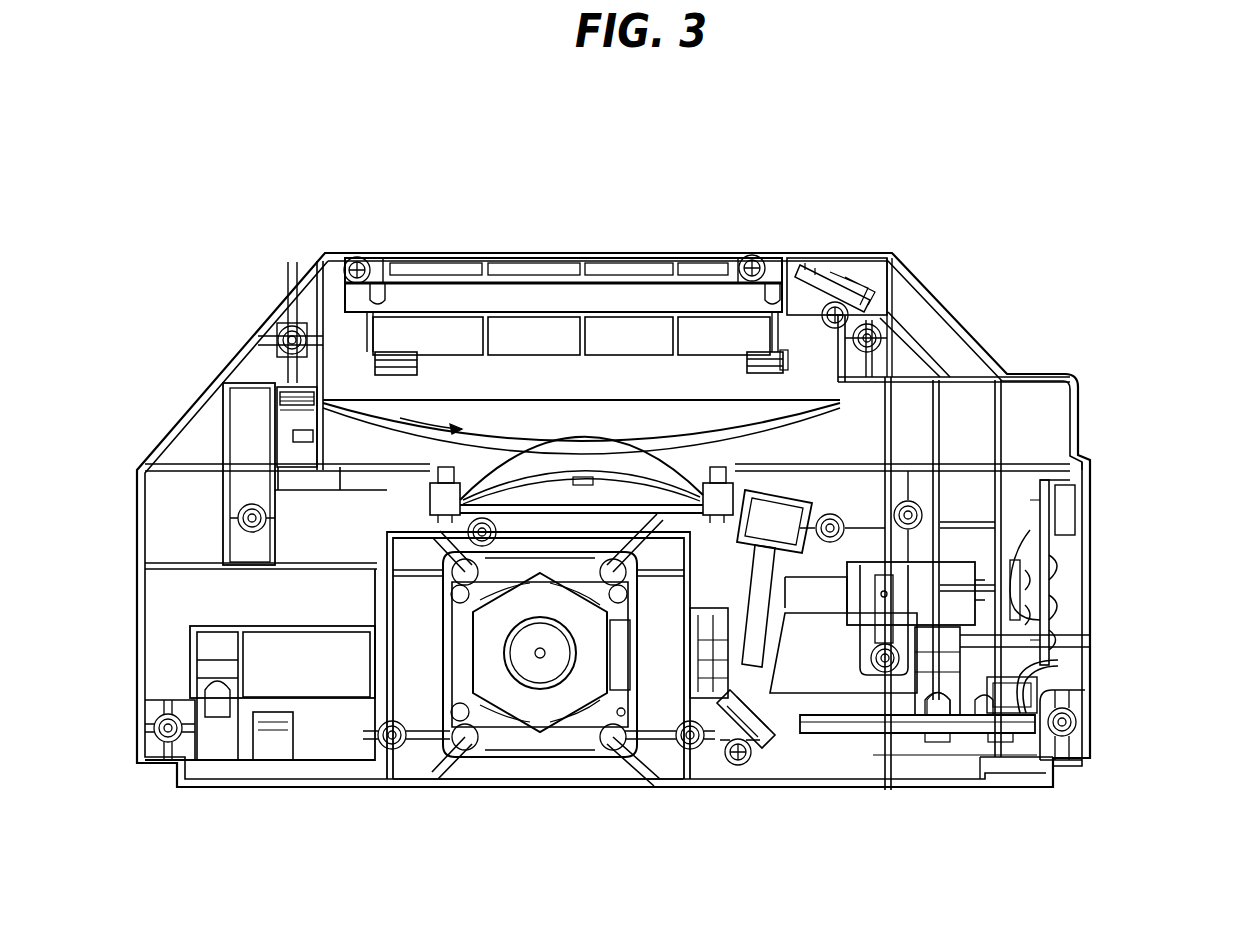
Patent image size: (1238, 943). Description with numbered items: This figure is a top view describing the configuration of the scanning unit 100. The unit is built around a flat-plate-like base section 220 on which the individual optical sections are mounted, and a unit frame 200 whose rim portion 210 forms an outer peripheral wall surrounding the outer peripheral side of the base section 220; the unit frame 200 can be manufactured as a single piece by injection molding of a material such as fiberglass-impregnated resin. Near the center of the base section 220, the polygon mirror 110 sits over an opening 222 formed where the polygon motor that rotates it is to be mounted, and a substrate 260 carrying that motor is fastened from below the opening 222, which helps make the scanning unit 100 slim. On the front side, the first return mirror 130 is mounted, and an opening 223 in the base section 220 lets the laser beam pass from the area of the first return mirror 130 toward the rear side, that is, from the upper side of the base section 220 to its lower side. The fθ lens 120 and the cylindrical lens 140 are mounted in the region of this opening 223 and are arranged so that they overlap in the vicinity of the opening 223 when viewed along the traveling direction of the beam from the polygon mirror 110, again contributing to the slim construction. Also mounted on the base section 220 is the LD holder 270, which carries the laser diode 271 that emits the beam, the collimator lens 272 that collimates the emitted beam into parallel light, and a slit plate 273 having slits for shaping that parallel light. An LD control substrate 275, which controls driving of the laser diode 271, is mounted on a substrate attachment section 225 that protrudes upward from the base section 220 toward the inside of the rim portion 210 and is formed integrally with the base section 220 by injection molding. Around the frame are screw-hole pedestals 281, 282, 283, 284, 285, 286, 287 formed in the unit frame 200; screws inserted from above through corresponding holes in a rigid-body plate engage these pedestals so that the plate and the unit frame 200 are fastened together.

The scanning unit 100 is at (568, 178).
The polygon mirror 110 is at (585, 714).
The fθ lens 120 is at (598, 443).
The first return mirror 130 is at (428, 302).
The cylindrical lens 140 is at (718, 427).
The unit frame 200 is at (985, 347).
The rim portion 210 is at (912, 291).
The base section 220 is at (413, 702).
The opening 222 is at (502, 733).
The opening 223 is at (303, 393).
The substrate attachment section 225 is at (827, 708).
The substrate 260 is at (482, 746).
The LD holder 270 is at (1003, 555).
The laser diode 271 is at (1035, 607).
The collimator lens 272 is at (1025, 580).
The slit plate 273 is at (1040, 642).
The LD control substrate 275 is at (873, 730).
The screw-hole pedestal 281 is at (163, 746).
The screw-hole pedestal 282 is at (290, 324).
The screw-hole pedestal 283 is at (880, 329).
The screw-hole pedestal 284 is at (1068, 744).
The screw-hole pedestal 285 is at (468, 534).
The screw-hole pedestal 286 is at (386, 748).
The screw-hole pedestal 287 is at (690, 752).